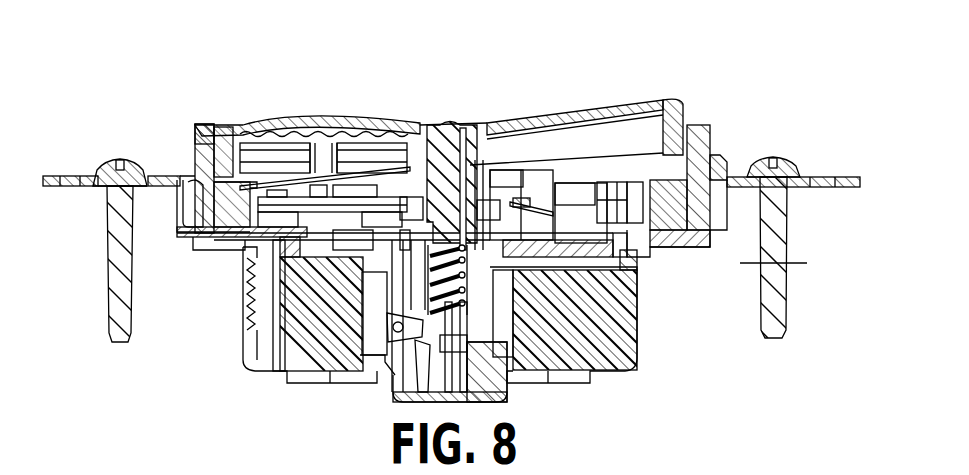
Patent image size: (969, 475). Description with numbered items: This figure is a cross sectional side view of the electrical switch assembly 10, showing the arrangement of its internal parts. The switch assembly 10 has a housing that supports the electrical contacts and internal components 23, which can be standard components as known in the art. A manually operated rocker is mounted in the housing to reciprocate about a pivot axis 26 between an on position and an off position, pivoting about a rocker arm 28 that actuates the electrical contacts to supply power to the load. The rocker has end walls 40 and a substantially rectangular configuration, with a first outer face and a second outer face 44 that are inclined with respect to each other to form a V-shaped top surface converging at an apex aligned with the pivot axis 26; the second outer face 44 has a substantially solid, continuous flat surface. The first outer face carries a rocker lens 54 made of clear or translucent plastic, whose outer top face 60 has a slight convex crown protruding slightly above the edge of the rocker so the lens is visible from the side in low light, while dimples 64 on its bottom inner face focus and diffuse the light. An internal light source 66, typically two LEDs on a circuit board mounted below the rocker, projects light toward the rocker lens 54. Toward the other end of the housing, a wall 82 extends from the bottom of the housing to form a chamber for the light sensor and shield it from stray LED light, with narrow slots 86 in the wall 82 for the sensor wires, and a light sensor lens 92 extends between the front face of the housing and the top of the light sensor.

The electrical switch assembly 10 is at (738, 71).
The internal components 23 is at (420, 370).
The pivot axis 26 is at (450, 140).
The rocker arm 28 is at (470, 150).
The end walls 40 is at (687, 120).
The second outer face 44 is at (670, 118).
The rocker lens 54 is at (347, 112).
The outer top face 60 is at (307, 120).
The dimples 64 is at (263, 127).
The light source 66 is at (316, 183).
The wall 82 is at (573, 190).
The narrow slots 86 is at (593, 182).
The light sensor lens 92 is at (657, 140).